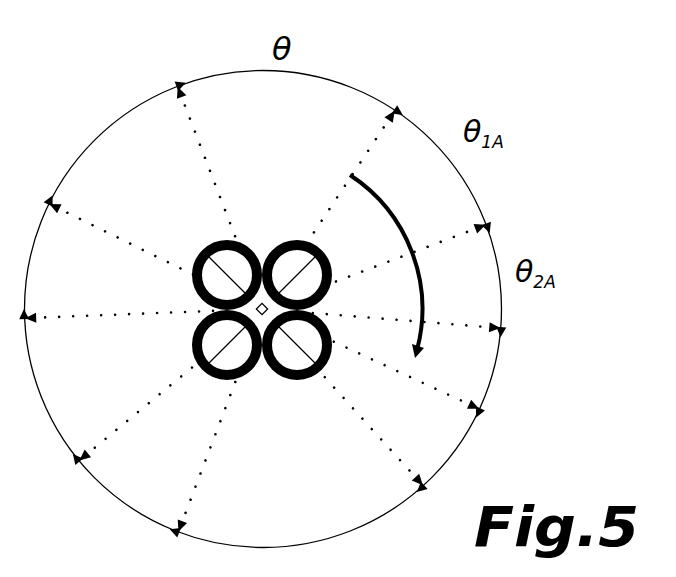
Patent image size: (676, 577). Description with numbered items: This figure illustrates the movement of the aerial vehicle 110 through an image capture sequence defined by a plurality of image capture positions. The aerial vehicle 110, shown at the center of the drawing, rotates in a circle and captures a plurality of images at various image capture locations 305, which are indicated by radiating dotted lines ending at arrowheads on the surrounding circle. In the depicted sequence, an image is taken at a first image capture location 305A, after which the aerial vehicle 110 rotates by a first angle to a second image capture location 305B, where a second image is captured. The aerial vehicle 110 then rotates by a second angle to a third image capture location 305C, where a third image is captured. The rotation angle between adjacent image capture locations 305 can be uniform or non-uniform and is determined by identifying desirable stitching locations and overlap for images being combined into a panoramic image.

The aerial vehicle 110 is at (200, 226).
The image capture locations 305 is at (176, 86).
The first image capture location 305A is at (396, 110).
The second image capture location 305B is at (486, 225).
The third image capture location 305C is at (498, 328).